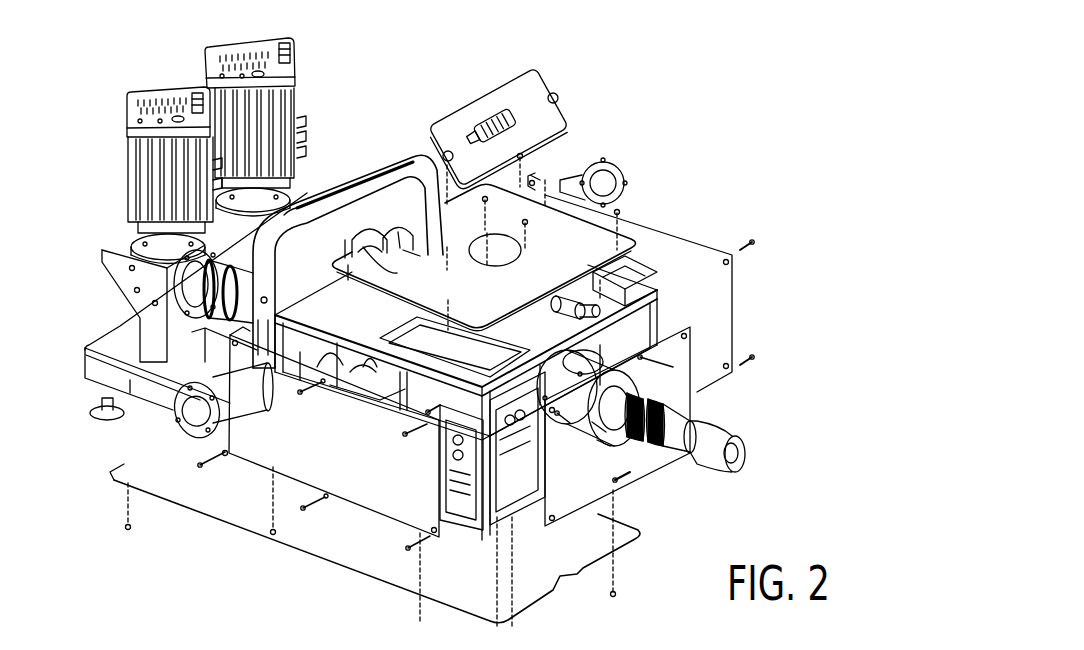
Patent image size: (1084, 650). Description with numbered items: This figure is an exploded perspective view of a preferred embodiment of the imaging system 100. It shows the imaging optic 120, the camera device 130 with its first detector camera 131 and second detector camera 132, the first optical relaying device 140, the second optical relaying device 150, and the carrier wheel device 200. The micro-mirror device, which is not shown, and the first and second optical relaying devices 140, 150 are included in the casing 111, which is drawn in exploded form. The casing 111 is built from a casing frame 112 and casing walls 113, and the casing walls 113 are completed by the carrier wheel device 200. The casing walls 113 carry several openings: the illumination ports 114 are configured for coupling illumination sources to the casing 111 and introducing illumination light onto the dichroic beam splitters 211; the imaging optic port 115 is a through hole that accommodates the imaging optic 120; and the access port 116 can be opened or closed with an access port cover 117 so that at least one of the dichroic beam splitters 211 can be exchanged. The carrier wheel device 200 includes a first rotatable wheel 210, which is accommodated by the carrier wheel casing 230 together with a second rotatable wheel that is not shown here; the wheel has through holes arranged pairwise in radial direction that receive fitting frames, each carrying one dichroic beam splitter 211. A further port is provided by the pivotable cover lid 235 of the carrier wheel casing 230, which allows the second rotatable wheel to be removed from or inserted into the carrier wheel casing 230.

The imaging system 100 is at (718, 25).
The casing 111 is at (243, 532).
The casing frame 112 is at (660, 310).
The casing walls 113 is at (527, 197).
The illumination ports 114 is at (607, 190).
The imaging optic port 115 is at (625, 383).
The access port 116 is at (470, 247).
The access port cover 117 is at (507, 80).
The imaging optic 120 is at (713, 435).
The camera device 130 is at (102, 225).
The first detector camera 131 is at (133, 118).
The second detector camera 132 is at (217, 68).
The first optical relaying device 140 is at (457, 422).
The second optical relaying device 150 is at (610, 287).
The carrier wheel device 200 is at (380, 228).
The first rotatable wheel 210 is at (322, 268).
The dichroic beam splitter 211 is at (367, 250).
The carrier wheel casing 230 is at (272, 273).
The pivotable cover lid 235 is at (390, 170).